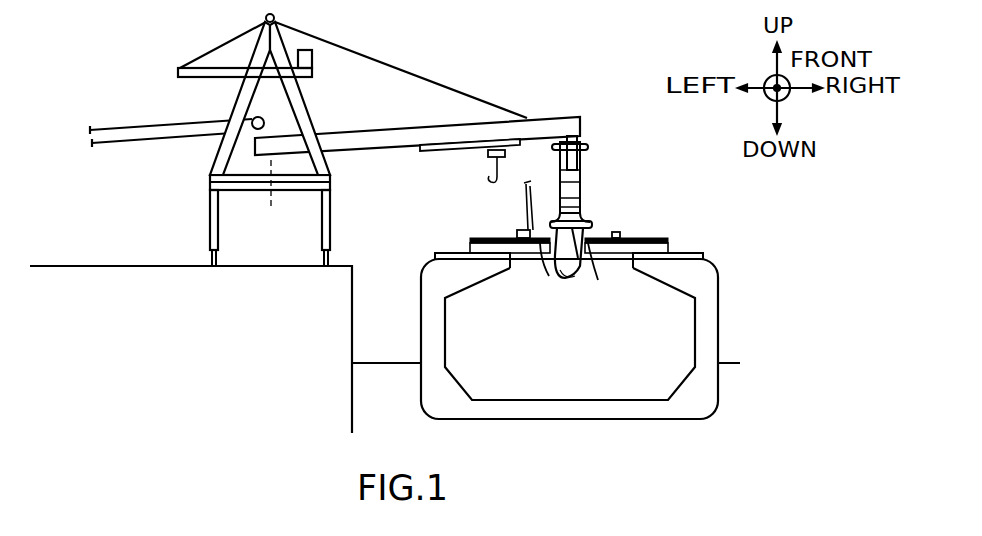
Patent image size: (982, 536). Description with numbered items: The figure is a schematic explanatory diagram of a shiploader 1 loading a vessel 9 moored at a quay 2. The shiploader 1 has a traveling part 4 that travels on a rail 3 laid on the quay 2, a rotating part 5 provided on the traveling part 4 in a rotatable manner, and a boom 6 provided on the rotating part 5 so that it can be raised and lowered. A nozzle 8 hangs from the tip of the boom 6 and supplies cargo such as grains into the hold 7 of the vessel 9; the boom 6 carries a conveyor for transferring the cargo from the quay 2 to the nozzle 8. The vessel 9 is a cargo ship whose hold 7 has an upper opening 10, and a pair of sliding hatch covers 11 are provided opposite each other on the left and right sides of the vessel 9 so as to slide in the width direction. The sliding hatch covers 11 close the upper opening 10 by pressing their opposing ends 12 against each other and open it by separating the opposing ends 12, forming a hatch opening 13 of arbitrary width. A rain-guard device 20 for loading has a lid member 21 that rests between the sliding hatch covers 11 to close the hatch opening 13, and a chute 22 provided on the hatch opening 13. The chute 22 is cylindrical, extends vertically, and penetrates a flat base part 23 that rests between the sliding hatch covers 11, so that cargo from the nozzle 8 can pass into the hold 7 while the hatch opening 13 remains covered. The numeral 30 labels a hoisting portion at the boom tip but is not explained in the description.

The shiploader 1 is at (454, 47).
The quay 2 is at (120, 258).
The rail 3 is at (210, 262).
The traveling part 4 is at (202, 200).
The rotating part 5 is at (229, 97).
The boom 6 is at (541, 125).
The hold 7 is at (558, 390).
The nozzle 8 is at (576, 165).
The vessel 9 is at (588, 332).
The upper opening 10 is at (579, 302).
The sliding hatch covers 11 is at (525, 250).
The opposing ends 12 is at (550, 258).
The hatch opening 13 is at (582, 272).
The rain-guard device 20 is at (572, 208).
The lid member 21 is at (500, 218).
The chute 22 is at (563, 270).
The flat base part 23 is at (621, 237).
The hoist unit 30 is at (597, 178).